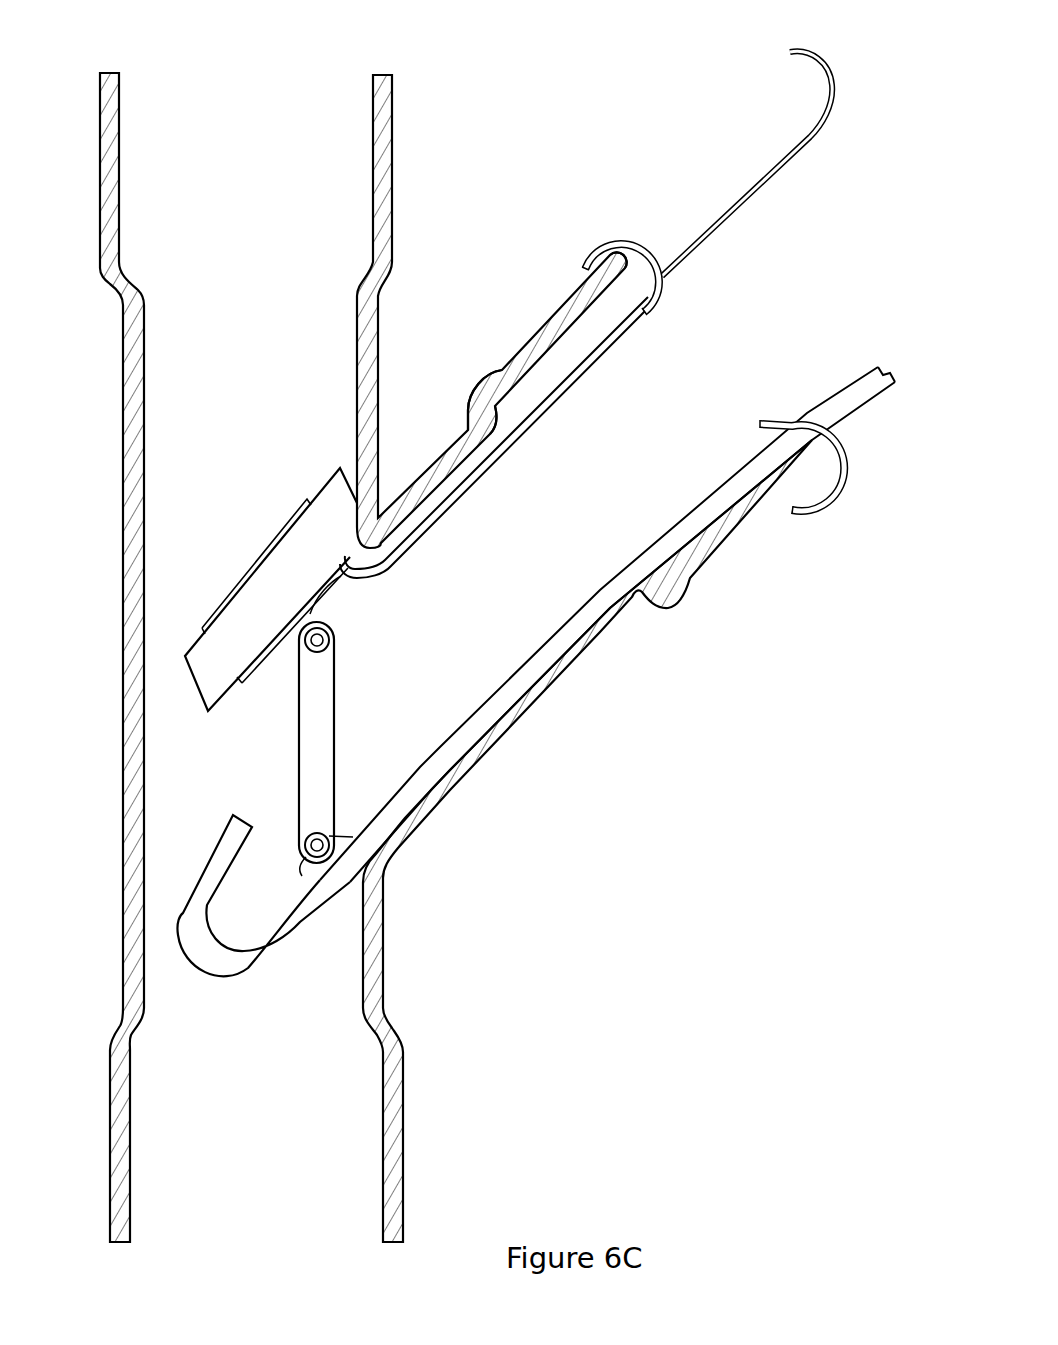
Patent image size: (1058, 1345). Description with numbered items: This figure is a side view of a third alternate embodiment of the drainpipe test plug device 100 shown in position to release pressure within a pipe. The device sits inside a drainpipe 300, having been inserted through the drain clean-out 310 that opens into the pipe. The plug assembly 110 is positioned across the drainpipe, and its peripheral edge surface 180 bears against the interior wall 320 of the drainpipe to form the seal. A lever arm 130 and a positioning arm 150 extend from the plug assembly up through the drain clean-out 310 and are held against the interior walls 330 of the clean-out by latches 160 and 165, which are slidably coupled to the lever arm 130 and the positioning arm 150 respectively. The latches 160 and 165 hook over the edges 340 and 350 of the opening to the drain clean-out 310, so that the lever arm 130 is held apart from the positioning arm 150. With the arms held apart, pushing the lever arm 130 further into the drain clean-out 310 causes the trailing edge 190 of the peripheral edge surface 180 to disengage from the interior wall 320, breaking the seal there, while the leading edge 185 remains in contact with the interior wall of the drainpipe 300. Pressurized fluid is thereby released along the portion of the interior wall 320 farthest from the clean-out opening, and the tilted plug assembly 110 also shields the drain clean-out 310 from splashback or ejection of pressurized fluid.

The drainpipe test plug device 100 is at (680, 550).
The plug assembly 110 is at (181, 655).
The lever arm 130 is at (502, 713).
The positioning arm 150 is at (743, 212).
The latch 160 is at (821, 513).
The latch 165 is at (610, 243).
The peripheral edge surface 180 is at (203, 697).
The leading edge 185 is at (378, 385).
The trailing edge 190 is at (222, 662).
The drainpipe 300 is at (256, 240).
The drain clean-out 310 is at (662, 417).
The interior wall of the drainpipe 320 is at (148, 375).
The interior walls of the drain clean-out 330 is at (457, 467).
The edge of the clean-out opening 340 is at (638, 243).
The edge of the clean-out opening 350 is at (832, 443).